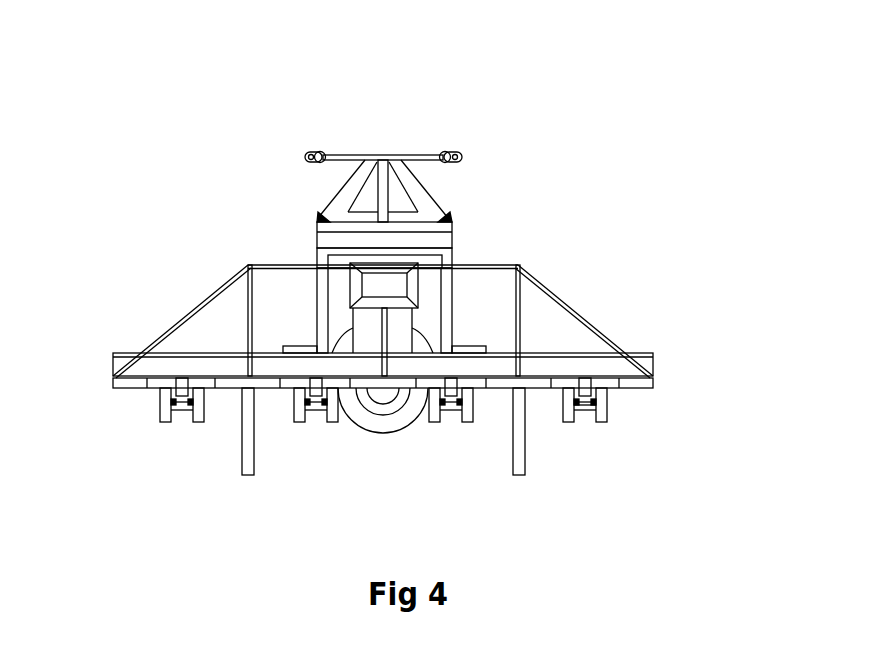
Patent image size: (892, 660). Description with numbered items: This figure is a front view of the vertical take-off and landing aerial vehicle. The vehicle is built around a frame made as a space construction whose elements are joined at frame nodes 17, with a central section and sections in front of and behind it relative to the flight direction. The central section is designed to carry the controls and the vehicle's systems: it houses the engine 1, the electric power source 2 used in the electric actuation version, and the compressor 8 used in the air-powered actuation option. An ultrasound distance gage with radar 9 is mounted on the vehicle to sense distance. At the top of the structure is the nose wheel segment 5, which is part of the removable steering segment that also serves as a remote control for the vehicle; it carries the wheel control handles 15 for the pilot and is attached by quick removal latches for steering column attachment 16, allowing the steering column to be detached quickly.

The engine 1 is at (378, 453).
The electric power source 2 is at (633, 414).
The nose wheel segment 5 is at (514, 101).
The compressor 8 is at (414, 431).
The ultrasound distance gage with radar 9 is at (327, 398).
The wheel control handles 15 is at (414, 125).
The quick removal latches for steering column attachment 16 is at (403, 177).
The frame nodes 17 is at (382, 275).